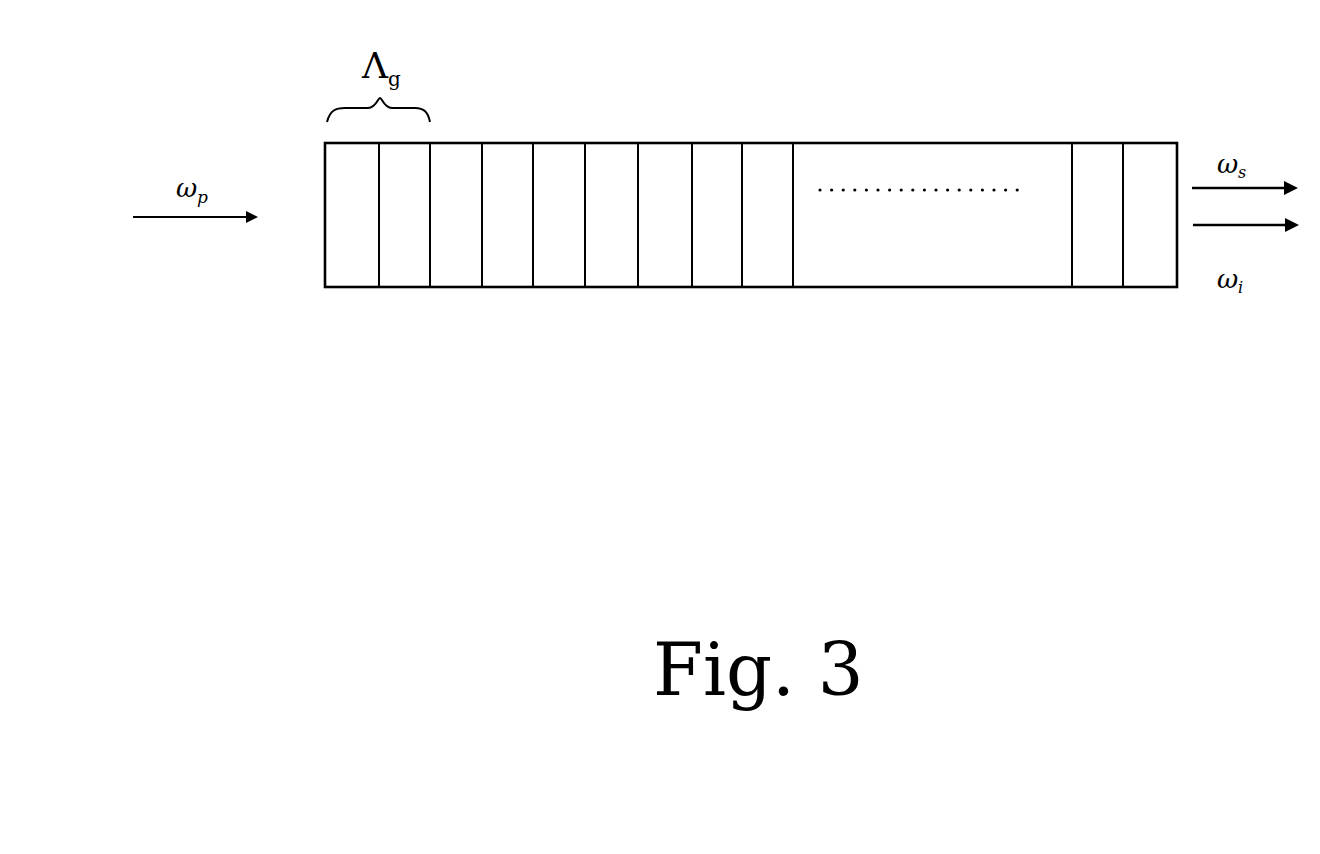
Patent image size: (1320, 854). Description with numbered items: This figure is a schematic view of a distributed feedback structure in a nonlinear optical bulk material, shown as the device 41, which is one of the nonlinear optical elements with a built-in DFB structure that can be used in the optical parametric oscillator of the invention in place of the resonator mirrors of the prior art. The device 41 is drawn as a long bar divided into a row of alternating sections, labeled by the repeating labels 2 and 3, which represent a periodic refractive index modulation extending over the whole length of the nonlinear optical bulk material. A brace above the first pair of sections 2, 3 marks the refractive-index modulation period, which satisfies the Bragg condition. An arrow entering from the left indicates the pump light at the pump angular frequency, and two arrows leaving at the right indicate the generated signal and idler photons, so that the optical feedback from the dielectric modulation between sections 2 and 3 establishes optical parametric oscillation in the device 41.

The refractive index modulation region 2 is at (733, 215).
The refractive index modulation region 3 is at (778, 215).
The DFB structure in nonlinear optical bulk material 41 is at (328, 311).